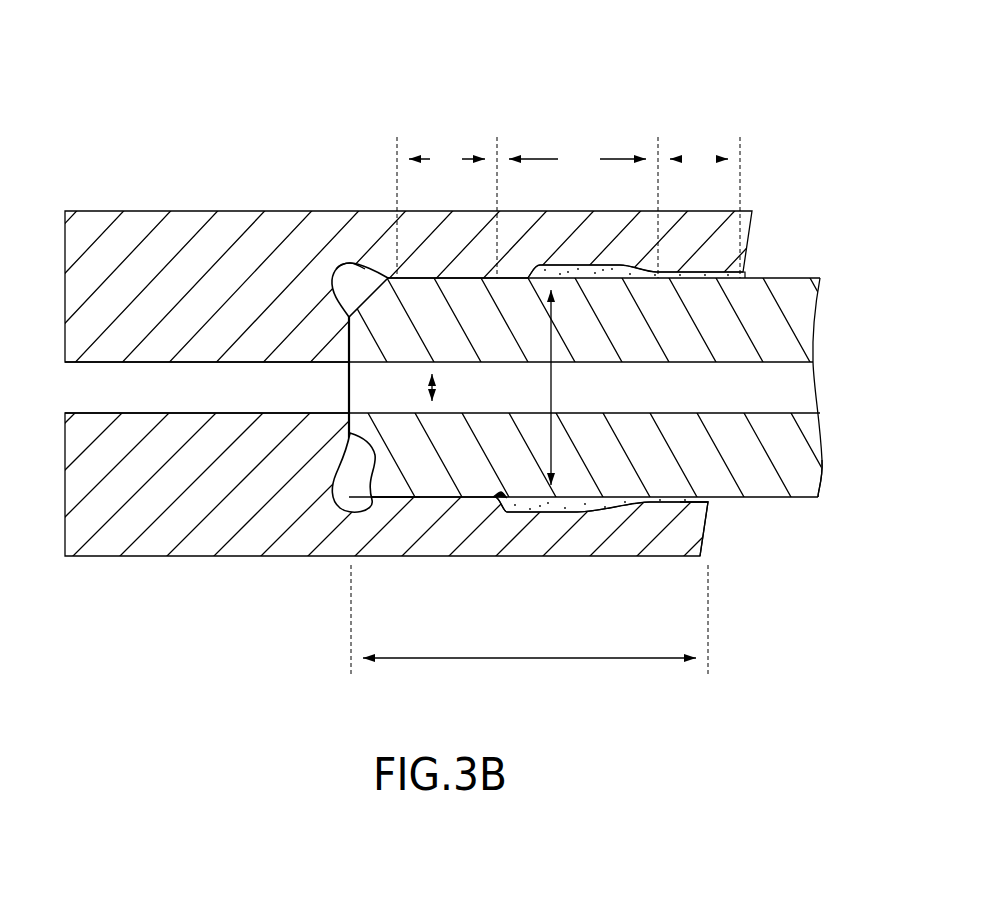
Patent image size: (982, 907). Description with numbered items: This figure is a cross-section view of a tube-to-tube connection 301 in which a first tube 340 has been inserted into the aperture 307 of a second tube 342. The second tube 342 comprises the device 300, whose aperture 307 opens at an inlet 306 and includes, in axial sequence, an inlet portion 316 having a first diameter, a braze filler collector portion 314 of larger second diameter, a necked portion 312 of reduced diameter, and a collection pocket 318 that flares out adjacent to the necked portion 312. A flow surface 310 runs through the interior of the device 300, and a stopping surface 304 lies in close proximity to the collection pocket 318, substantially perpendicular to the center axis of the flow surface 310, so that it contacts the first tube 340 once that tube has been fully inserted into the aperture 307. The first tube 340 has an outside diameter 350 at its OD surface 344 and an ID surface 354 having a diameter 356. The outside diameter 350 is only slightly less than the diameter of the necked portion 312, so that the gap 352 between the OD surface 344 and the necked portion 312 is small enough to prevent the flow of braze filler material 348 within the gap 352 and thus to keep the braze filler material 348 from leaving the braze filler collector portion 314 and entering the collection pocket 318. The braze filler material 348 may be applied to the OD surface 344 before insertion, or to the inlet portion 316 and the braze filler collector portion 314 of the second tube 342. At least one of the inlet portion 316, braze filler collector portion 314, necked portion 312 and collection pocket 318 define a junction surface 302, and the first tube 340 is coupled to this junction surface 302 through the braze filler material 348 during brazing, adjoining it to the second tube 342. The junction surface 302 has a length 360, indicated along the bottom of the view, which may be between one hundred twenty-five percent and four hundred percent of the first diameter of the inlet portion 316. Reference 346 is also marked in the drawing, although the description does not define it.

The device 300 is at (103, 211).
The tube-to-tube connection 301 is at (512, 90).
The junction surface 302 is at (503, 498).
The stopping surface 304 is at (372, 500).
The inlet 306 is at (762, 272).
The aperture 307 is at (720, 507).
The flow surface 310 is at (113, 413).
The necked portion 312 is at (447, 207).
The braze filler collector portion 314 is at (583, 207).
The inlet portion 316 is at (705, 207).
The collection pocket 318 is at (345, 252).
The first tube 340 is at (820, 278).
The second tube 342 is at (692, 556).
The OD surface 344 is at (818, 497).
The upper adhesive bead 346 is at (334, 315).
The braze filler material 348 is at (567, 500).
The outside diameter 350 is at (551, 387).
The gap 352 is at (425, 508).
The ID surface 354 is at (697, 413).
The diameter 356 is at (432, 387).
The length 360 is at (562, 658).